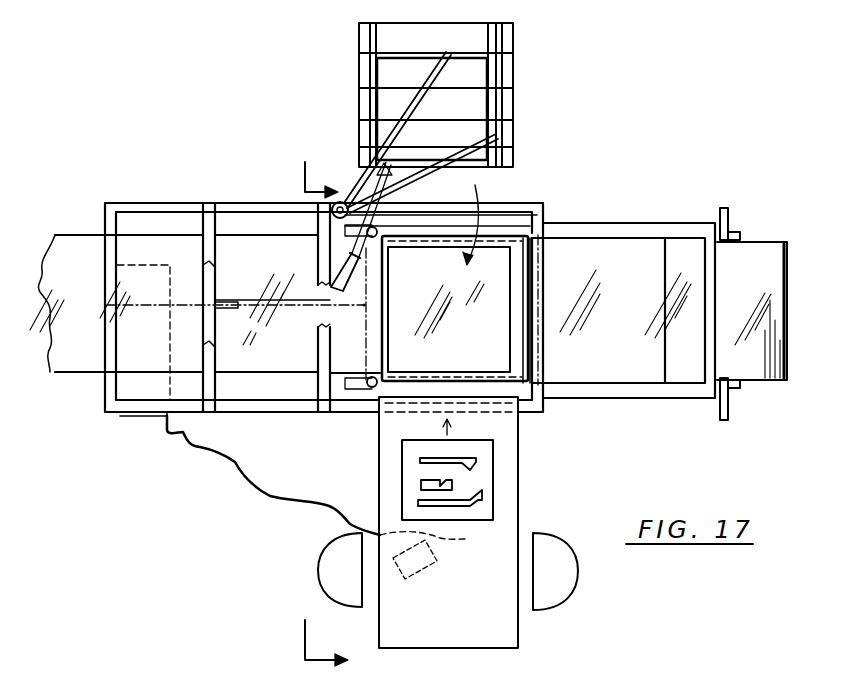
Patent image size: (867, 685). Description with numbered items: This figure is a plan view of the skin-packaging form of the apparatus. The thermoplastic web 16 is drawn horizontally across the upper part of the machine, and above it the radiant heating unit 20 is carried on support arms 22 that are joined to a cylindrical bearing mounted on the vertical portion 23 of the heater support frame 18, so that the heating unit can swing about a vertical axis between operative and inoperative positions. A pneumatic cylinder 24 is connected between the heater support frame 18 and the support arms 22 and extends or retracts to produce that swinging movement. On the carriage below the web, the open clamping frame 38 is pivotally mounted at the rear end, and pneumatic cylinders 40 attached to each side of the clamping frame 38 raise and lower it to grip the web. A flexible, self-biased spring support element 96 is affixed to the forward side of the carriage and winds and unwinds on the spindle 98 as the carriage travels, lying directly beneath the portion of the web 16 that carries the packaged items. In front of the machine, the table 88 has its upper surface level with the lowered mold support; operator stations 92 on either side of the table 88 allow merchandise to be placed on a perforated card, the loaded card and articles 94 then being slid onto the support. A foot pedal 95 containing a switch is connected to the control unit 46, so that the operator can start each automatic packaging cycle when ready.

The web 16 is at (631, 276).
The heater support frame 18 is at (326, 412).
The radiant heating unit 20 is at (515, 105).
The support arms 22 is at (444, 60).
The vertical portion 23 is at (332, 205).
The pneumatic cylinder 24 is at (352, 264).
The open clamping frame 38 is at (392, 343).
The pneumatic cylinders 40 is at (378, 228).
The control unit 46 is at (155, 422).
The table 88 is at (464, 622).
The operator stations 92 is at (322, 582).
The composite card and articles 94 is at (500, 472).
The foot pedal 95 is at (483, 549).
The support element 96 is at (238, 303).
The spindle 98 is at (228, 306).